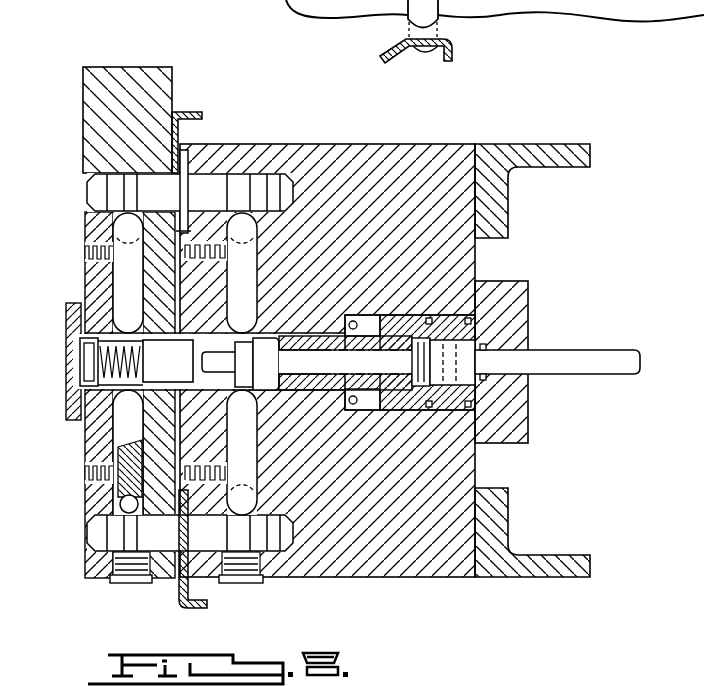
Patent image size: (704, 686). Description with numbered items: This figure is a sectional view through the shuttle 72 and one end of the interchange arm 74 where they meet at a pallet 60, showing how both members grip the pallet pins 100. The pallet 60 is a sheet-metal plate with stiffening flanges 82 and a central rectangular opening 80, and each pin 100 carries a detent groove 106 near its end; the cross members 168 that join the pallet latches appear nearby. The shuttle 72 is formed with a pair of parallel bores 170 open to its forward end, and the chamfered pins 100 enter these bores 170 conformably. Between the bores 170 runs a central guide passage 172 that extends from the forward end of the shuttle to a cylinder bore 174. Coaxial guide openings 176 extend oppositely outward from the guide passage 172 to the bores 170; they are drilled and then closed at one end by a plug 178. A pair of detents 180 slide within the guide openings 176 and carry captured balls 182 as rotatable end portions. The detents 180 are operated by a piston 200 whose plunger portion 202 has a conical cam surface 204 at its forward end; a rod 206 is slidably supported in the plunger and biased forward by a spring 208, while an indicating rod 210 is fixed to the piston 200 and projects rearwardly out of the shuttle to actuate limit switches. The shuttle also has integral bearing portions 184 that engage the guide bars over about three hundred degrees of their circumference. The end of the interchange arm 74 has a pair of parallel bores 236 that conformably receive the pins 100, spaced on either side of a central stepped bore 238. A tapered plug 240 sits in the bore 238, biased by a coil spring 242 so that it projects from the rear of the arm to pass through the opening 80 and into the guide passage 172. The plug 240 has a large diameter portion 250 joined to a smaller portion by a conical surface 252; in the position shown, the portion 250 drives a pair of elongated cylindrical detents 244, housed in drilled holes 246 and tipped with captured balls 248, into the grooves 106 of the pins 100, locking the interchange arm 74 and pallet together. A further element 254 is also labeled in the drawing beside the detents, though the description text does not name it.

The pallet 60 is at (190, 143).
The shuttle 72 is at (375, 147).
The interchange arm 74 is at (120, 72).
The central rectangular opening 80 is at (170, 402).
The stiffening flanges 82 is at (188, 114).
The pins 100 is at (194, 365).
The detent groove 106 is at (127, 173).
The cross members 168 is at (452, 50).
The bores 170 is at (214, 174).
The central guide passage 172 is at (310, 312).
The cylinder bore 174 is at (374, 316).
The guide openings 176 is at (257, 242).
The plug 178 is at (278, 565).
The detents 180 is at (257, 272).
The captured balls 182 is at (300, 203).
The bearing portions 184 is at (540, 153).
The piston 200 is at (478, 312).
The plunger portion 202 is at (376, 405).
The conical cam surface 204 is at (267, 333).
The rod 206 is at (233, 382).
The spring 208 is at (407, 312).
The indicating rod 210 is at (579, 357).
The bores 236 is at (87, 178).
The central stepped bore 238 is at (78, 397).
The tapered plug 240 is at (188, 333).
The coil spring 242 is at (80, 363).
The detents 244 is at (116, 282).
The drilled holes 246 is at (70, 292).
The captured balls 248 is at (122, 507).
The large diameter portion 250 is at (72, 347).
The conical surface 252 is at (168, 362).
The spring 254 is at (98, 243).